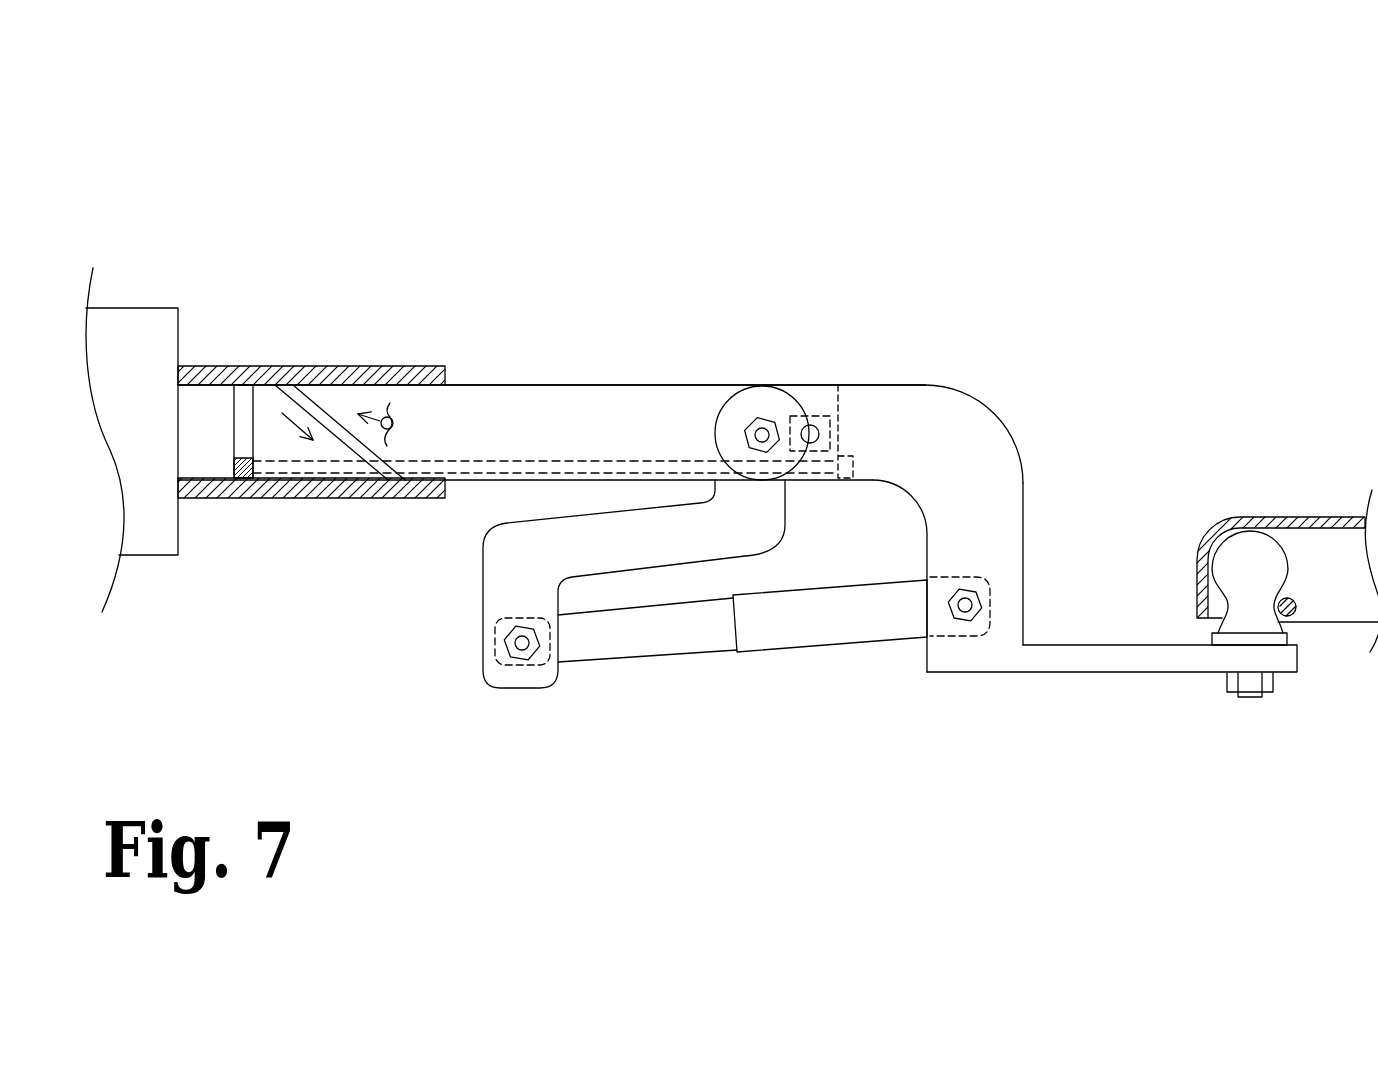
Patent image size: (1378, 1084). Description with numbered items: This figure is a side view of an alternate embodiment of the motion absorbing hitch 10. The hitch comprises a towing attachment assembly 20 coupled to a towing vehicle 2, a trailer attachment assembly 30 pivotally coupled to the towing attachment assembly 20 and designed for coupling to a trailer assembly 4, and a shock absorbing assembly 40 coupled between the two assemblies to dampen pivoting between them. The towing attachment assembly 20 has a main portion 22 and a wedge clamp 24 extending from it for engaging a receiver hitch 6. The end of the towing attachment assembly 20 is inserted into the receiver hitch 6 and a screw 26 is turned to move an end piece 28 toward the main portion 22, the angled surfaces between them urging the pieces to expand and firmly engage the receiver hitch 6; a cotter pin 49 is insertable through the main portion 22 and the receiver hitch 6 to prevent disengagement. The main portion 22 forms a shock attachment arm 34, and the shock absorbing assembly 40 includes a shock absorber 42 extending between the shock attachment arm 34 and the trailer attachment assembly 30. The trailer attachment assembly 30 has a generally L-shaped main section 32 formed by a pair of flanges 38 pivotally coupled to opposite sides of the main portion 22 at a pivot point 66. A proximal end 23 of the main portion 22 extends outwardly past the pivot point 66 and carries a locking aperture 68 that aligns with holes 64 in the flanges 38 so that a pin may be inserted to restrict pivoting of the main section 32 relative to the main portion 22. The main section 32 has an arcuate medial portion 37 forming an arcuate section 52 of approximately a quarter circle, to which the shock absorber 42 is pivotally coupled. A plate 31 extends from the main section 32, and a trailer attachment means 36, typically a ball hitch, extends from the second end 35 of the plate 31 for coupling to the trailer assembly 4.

The towing vehicle 2 is at (133, 327).
The trailer assembly 4 is at (1342, 550).
The receiver hitch 6 is at (207, 452).
The motion absorbing hitch 10 is at (1108, 204).
The towing attachment assembly 20 is at (500, 363).
The main portion 22 is at (377, 408).
The proximal end 23 is at (647, 387).
The wedge clamp 24 is at (328, 515).
The screw 26 is at (697, 460).
The end piece 28 is at (272, 408).
The trailer attachment assembly 30 is at (1168, 468).
The plate 31 is at (1117, 658).
The main section 32 is at (1037, 472).
The shock attachment arm 34 is at (495, 582).
The second end 35 is at (1235, 658).
The trailer attachment means 36 is at (1248, 577).
The arcuate medial portion 37 is at (988, 432).
The flanges 38 is at (882, 410).
The shock absorbing assembly 40 is at (853, 654).
The shock absorber 42 is at (778, 628).
The cotter pin 49 is at (394, 414).
The arcuate section 52 is at (930, 425).
The aligned holes 64 is at (792, 420).
The pivot point 66 is at (763, 435).
The locking aperture 68 is at (822, 418).